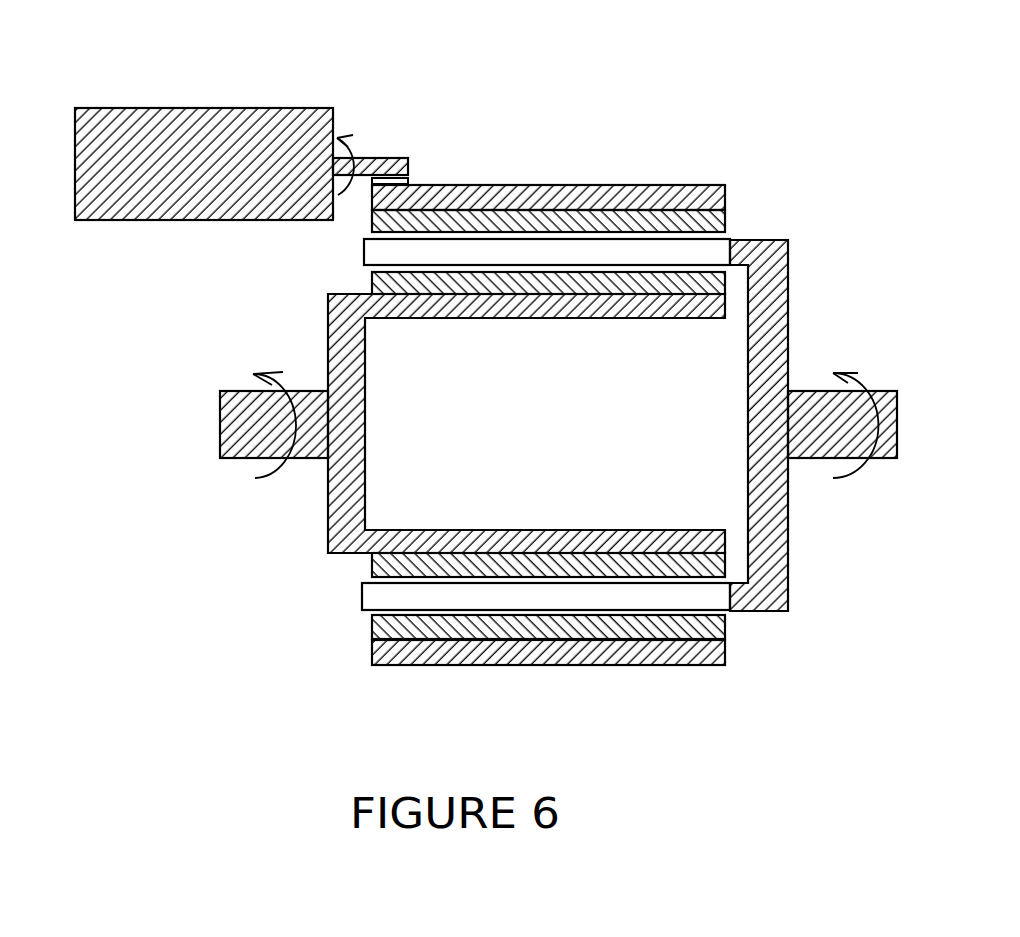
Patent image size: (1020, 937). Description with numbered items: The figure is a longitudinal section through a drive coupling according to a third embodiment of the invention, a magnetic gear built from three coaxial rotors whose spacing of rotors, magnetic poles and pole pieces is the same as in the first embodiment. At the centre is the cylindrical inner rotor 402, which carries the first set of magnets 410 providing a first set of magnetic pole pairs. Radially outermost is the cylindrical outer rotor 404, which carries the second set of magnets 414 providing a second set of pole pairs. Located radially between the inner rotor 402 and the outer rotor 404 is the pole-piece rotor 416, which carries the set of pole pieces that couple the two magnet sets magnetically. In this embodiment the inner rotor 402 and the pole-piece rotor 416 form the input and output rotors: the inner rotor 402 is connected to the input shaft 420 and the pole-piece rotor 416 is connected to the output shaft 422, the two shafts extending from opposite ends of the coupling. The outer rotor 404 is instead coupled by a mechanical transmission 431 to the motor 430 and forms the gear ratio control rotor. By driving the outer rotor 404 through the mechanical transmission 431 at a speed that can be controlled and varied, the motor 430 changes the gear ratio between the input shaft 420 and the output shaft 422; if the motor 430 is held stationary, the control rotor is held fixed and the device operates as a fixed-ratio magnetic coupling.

The inner rotor 402 is at (512, 305).
The outer rotor 404 is at (458, 195).
The first set of magnets 410 is at (653, 278).
The second set of magnets 414 is at (557, 218).
The pole-piece rotor 416 is at (740, 245).
The input shaft 420 is at (262, 455).
The output shaft 422 is at (805, 458).
The motor 430 is at (147, 115).
The mechanical transmission 431 is at (388, 153).